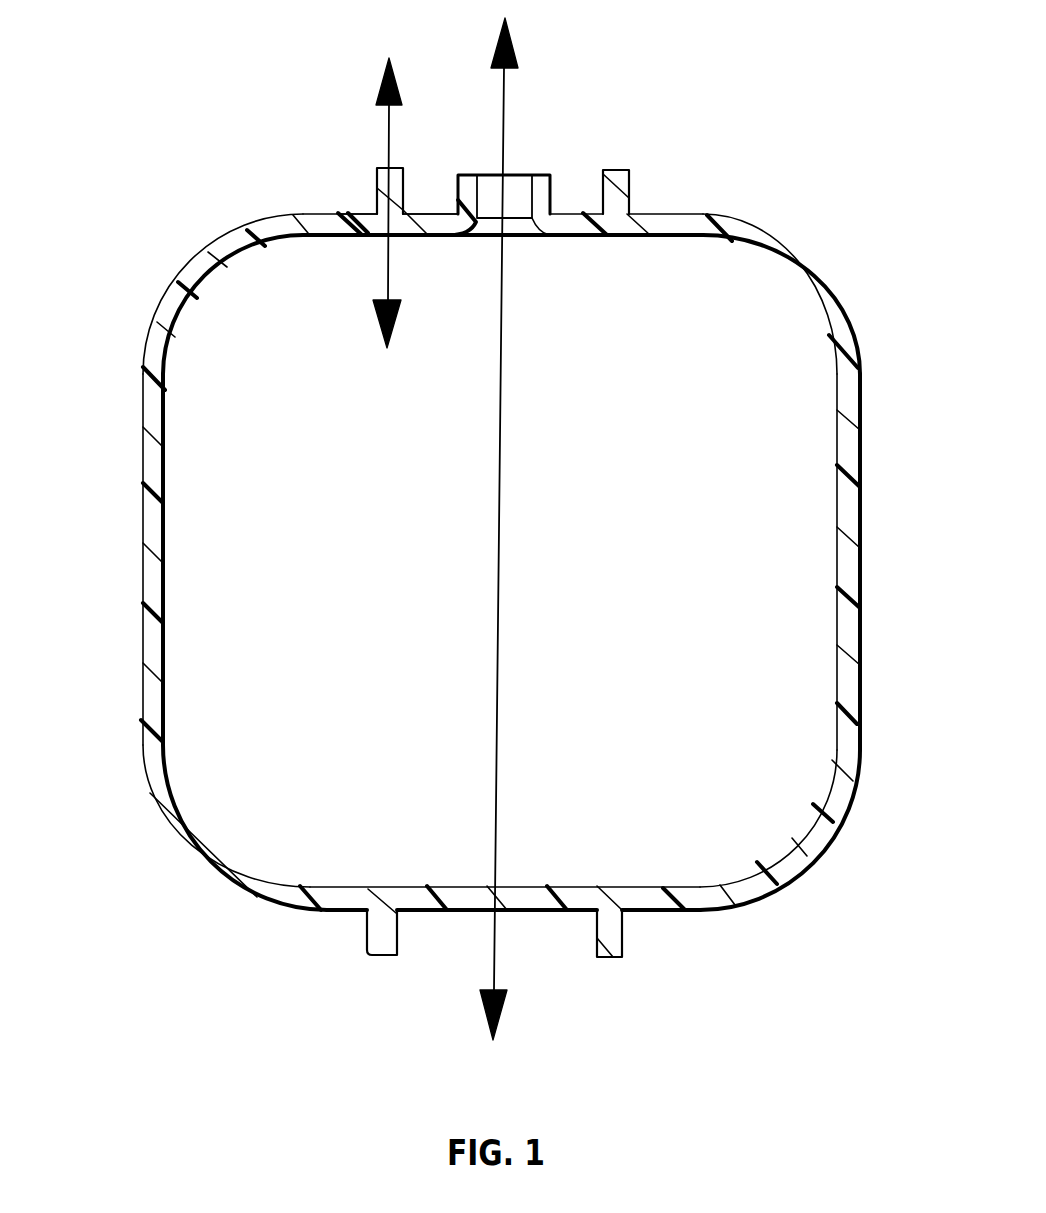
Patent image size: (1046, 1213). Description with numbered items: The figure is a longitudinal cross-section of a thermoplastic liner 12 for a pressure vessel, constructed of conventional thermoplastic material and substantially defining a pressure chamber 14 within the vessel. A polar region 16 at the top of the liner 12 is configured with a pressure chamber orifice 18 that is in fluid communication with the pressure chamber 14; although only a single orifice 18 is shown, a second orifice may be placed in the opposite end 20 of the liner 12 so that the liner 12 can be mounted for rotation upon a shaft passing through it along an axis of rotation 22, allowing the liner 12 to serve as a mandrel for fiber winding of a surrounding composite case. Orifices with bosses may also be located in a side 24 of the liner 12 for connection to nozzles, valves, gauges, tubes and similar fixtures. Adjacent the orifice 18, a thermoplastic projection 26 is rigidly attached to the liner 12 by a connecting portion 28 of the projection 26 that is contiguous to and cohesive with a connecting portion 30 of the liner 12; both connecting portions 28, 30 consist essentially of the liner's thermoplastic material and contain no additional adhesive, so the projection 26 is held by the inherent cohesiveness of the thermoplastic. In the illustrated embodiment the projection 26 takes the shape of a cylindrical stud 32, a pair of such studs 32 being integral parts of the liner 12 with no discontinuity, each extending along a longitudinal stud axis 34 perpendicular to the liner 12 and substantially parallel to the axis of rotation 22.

The thermoplastic liner 12 is at (498, 572).
The pressure chamber 14 is at (688, 620).
The polar region 16 is at (302, 214).
The pressure chamber orifice 18 is at (512, 200).
The opposite end 20 is at (332, 911).
The axis of rotation 22 is at (495, 955).
The side 24 is at (858, 507).
The thermoplastic projection 26 is at (403, 203).
The connecting portion of the projection 28 is at (360, 203).
The connecting portion of the liner 30 is at (384, 222).
The cylindrical stud 32 is at (403, 167).
The longitudinal stud axis 34 is at (388, 272).